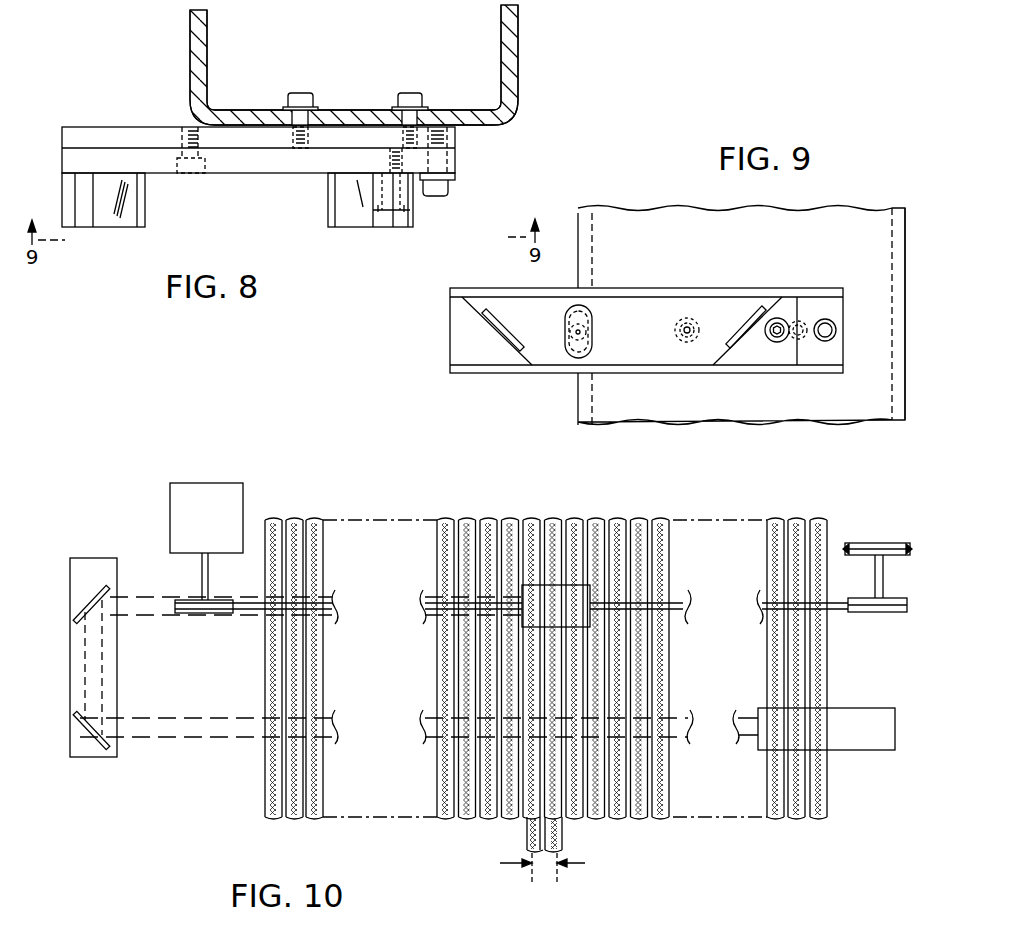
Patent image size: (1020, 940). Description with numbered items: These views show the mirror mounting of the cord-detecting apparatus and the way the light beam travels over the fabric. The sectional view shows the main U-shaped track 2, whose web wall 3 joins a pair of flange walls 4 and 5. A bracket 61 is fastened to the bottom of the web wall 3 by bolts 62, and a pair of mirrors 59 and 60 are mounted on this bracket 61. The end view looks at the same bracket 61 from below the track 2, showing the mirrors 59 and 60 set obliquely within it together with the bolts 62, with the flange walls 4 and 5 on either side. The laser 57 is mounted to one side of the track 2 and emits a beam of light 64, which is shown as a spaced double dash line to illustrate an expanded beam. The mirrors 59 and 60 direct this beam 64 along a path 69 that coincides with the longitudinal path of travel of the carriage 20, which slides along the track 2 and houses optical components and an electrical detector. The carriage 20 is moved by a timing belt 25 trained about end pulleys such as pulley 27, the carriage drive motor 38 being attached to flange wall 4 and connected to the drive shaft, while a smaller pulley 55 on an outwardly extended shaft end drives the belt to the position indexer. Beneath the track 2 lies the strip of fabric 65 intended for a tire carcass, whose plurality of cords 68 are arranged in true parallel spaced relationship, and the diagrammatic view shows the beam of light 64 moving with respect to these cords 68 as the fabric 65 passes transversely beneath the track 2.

In FIG. 8, the U-shaped track 2 is at (525, 55).
In FIG. 9, the U-shaped track 2 is at (862, 238).
In FIG. 8, the web wall 3 is at (357, 110).
In FIG. 9, the web wall 3 is at (657, 243).
In FIG. 8, the flange wall 4 is at (501, 22).
In FIG. 9, the flange wall 4 is at (906, 353).
In FIG. 8, the flange wall 5 is at (208, 43).
In FIG. 9, the flange wall 5 is at (578, 235).
In FIG. 10, the carriage 20 is at (565, 597).
In FIG. 10, the timing belt 25 is at (667, 610).
In FIG. 10, the end pulley 27 is at (873, 612).
In FIG. 10, the carriage drive motor 38 is at (207, 500).
In FIG. 10, the smaller pulley 55 is at (877, 543).
In FIG. 10, the laser 57 is at (855, 701).
In FIG. 8, the mirror 59 is at (103, 217).
In FIG. 9, the mirror 59 is at (498, 320).
In FIG. 10, the mirror 59 is at (75, 743).
In FIG. 8, the mirror 60 is at (348, 213).
In FIG. 9, the mirror 60 is at (743, 323).
In FIG. 10, the mirror 60 is at (88, 606).
In FIG. 8, the bracket 61 is at (262, 163).
In FIG. 9, the bracket 61 is at (645, 337).
In FIG. 10, the bracket 61 is at (105, 683).
In FIG. 8, the bolt 62 is at (290, 100).
In FIG. 9, the bolt 62 is at (682, 318).
In FIG. 10, the beam of light 64 is at (198, 745).
In FIG. 10, the fabric 65 is at (390, 512).
In FIG. 10, the cord 68 is at (460, 655).
In FIG. 10, the path 69 is at (148, 597).